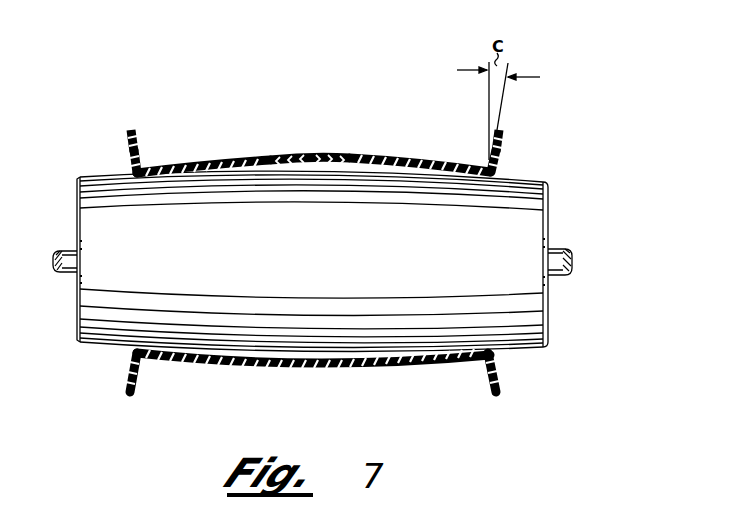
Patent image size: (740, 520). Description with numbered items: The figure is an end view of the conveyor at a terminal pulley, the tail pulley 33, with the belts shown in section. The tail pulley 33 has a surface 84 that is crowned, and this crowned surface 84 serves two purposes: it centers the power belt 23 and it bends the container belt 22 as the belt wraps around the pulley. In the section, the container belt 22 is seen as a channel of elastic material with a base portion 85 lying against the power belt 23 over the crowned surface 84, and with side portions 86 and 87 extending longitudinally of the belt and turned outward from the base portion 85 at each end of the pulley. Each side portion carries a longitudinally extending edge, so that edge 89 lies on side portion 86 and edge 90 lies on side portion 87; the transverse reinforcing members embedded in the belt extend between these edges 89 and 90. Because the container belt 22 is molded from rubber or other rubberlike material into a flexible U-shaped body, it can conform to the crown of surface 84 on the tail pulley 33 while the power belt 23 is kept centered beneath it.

The container belt 22 is at (368, 155).
The power belt 23 is at (315, 156).
The tail pulley 33 is at (540, 204).
The surface 84 is at (540, 181).
The base portion 85 is at (254, 159).
The side portion 86 is at (130, 152).
The side portion 87 is at (502, 144).
The longitudinally extending edge 89 is at (131, 128).
The longitudinally extending edge 90 is at (500, 130).